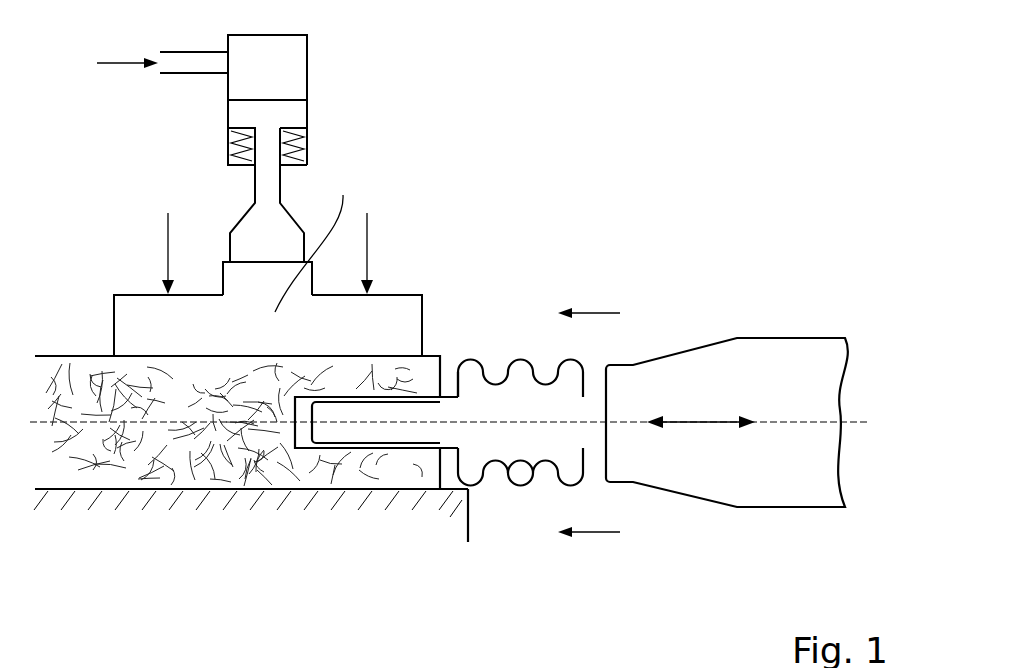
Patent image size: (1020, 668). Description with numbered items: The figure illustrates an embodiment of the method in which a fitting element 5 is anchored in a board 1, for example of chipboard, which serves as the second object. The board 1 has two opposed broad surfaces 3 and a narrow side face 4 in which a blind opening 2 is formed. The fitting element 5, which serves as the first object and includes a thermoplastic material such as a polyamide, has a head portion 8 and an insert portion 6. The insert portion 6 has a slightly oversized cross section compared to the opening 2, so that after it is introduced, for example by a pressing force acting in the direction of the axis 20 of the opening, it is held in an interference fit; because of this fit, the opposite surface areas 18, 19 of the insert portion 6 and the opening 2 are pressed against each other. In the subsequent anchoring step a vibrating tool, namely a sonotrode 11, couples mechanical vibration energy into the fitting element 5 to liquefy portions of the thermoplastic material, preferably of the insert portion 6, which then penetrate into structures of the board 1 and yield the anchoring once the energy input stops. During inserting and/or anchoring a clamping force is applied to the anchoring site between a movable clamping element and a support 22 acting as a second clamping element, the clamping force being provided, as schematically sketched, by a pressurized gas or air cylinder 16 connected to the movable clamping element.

The board 1 is at (127, 458).
The blind opening 2 is at (302, 438).
The broad surfaces 3 is at (72, 356).
The narrow side face 4 is at (443, 373).
The fitting element 5 is at (522, 397).
The insert portion 6 is at (452, 430).
The head portion 8 is at (520, 478).
The sonotrode 11 is at (781, 375).
The pressurized gas or air cylinder 16 is at (362, 114).
The surface area of the insert portion 18 is at (392, 396).
The surface area of the opening 19 is at (378, 400).
The axis of the opening 20 is at (473, 397).
The support 22 is at (455, 517).